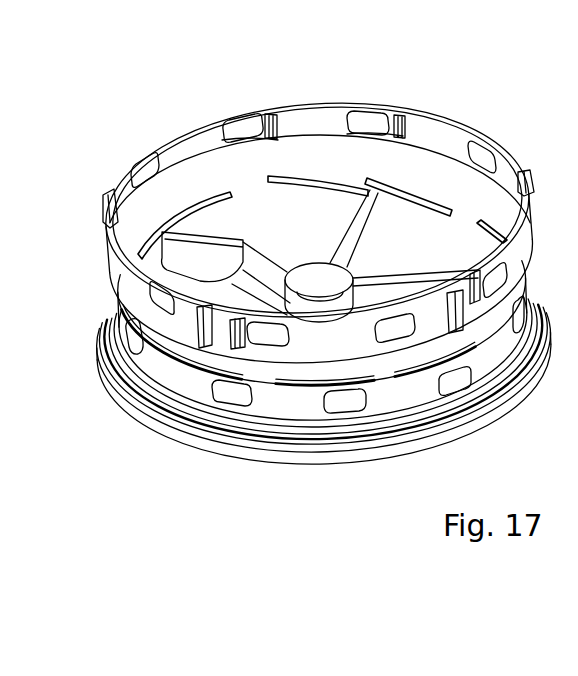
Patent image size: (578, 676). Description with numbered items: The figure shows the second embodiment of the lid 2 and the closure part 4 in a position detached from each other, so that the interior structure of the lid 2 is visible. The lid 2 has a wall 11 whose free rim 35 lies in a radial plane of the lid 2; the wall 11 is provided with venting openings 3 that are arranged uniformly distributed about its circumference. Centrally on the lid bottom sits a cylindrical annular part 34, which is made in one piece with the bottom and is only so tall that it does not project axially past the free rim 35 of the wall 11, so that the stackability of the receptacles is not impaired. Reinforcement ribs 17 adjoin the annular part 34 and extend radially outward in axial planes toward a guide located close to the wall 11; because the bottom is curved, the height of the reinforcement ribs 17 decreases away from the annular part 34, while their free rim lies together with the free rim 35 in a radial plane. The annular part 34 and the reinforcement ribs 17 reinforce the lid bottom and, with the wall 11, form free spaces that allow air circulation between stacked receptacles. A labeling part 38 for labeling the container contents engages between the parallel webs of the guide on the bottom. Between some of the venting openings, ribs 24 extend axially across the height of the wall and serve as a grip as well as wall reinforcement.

The lid 2 is at (214, 462).
The venting openings 3 is at (440, 386).
The closure part 4 is at (283, 104).
The wall 11 is at (174, 376).
The reinforcement ribs 17 is at (421, 272).
The ribs 24 is at (101, 196).
The annular part 34 is at (307, 263).
The free rim 35 is at (283, 397).
The labeling part 38 is at (197, 262).